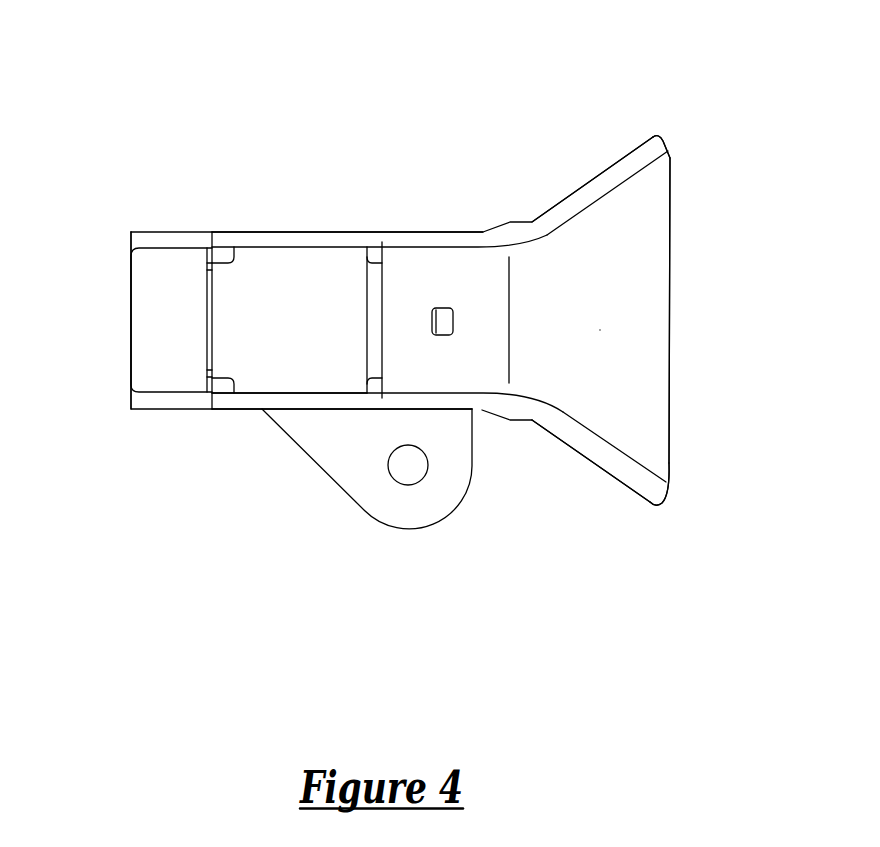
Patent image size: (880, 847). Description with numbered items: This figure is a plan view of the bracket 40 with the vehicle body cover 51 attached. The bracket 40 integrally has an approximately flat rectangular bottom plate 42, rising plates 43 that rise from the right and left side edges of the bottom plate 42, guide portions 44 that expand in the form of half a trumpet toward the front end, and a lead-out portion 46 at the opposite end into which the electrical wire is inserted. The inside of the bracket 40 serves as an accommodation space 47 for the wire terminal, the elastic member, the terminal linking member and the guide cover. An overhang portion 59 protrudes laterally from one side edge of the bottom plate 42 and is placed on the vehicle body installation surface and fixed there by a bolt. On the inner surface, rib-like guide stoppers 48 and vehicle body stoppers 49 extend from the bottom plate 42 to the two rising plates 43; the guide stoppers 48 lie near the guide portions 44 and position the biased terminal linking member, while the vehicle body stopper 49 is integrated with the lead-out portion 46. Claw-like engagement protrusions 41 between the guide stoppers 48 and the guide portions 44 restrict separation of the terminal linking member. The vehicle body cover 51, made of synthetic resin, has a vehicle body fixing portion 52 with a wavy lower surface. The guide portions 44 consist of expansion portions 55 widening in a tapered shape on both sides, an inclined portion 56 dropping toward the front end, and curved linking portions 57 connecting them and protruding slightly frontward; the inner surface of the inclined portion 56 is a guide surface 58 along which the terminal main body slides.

The bracket 40 is at (490, 226).
The engagement protrusion 41 is at (444, 308).
The bottom plate 42 is at (248, 370).
The rising plate 43 is at (321, 240).
The guide portion 44 is at (655, 134).
The lead-out portion 46 is at (130, 243).
The accommodation space 47 is at (297, 263).
The guide stopper 48 is at (353, 252).
The vehicle body stopper 49 is at (250, 253).
The vehicle body cover 51 is at (135, 300).
The vehicle body fixing portion 52 is at (145, 349).
The expansion portion 55 is at (595, 175).
The inclined portion 56 is at (670, 320).
The linking portion 57 is at (670, 172).
The guide surface 58 is at (643, 363).
The overhang portion 59 is at (408, 505).